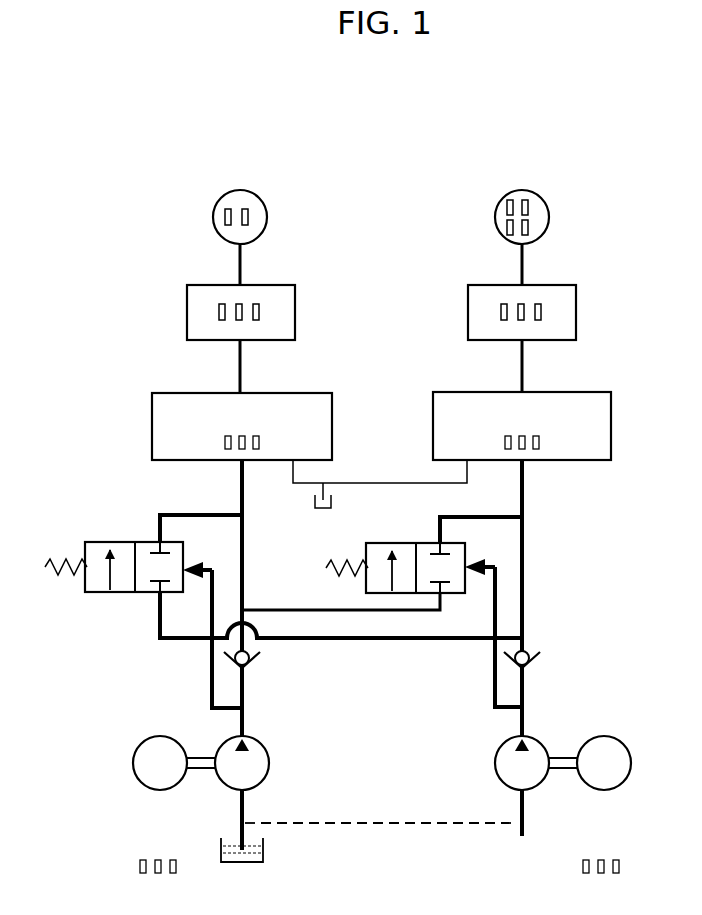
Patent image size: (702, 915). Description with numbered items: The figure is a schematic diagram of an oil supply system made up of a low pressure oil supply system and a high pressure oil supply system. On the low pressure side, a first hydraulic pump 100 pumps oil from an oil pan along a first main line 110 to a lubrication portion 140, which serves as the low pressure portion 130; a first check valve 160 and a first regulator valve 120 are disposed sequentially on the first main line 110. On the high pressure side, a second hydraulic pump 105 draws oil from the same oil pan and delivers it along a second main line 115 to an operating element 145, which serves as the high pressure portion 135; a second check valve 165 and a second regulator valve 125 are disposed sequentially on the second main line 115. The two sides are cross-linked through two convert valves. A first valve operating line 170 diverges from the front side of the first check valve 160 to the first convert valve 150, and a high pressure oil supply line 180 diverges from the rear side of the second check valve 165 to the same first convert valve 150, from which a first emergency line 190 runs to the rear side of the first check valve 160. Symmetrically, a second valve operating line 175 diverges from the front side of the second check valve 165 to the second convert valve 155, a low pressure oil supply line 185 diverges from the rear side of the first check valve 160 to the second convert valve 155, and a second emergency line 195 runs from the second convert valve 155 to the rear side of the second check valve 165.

The first hydraulic pump 100 is at (128, 788).
The second hydraulic pump 105 is at (485, 772).
The first main line 110 is at (243, 590).
The second main line 115 is at (524, 606).
The first regulator valve 120 is at (152, 425).
The second regulator valve 125 is at (611, 425).
The low pressure portion 130 is at (295, 312).
The high pressure portion 135 is at (576, 312).
The lubrication portion 140 is at (268, 217).
The operating element 145 is at (550, 217).
The first convert valve 150 is at (71, 528).
The second convert valve 155 is at (355, 545).
The first check valve 160 is at (252, 667).
The second check valve 165 is at (532, 667).
The first valve operating line 170 is at (212, 681).
The second valve operating line 175 is at (489, 684).
The high pressure oil supply line 180 is at (393, 641).
The low pressure oil supply line 185 is at (315, 612).
The first emergency line 190 is at (181, 514).
The second emergency line 195 is at (493, 517).